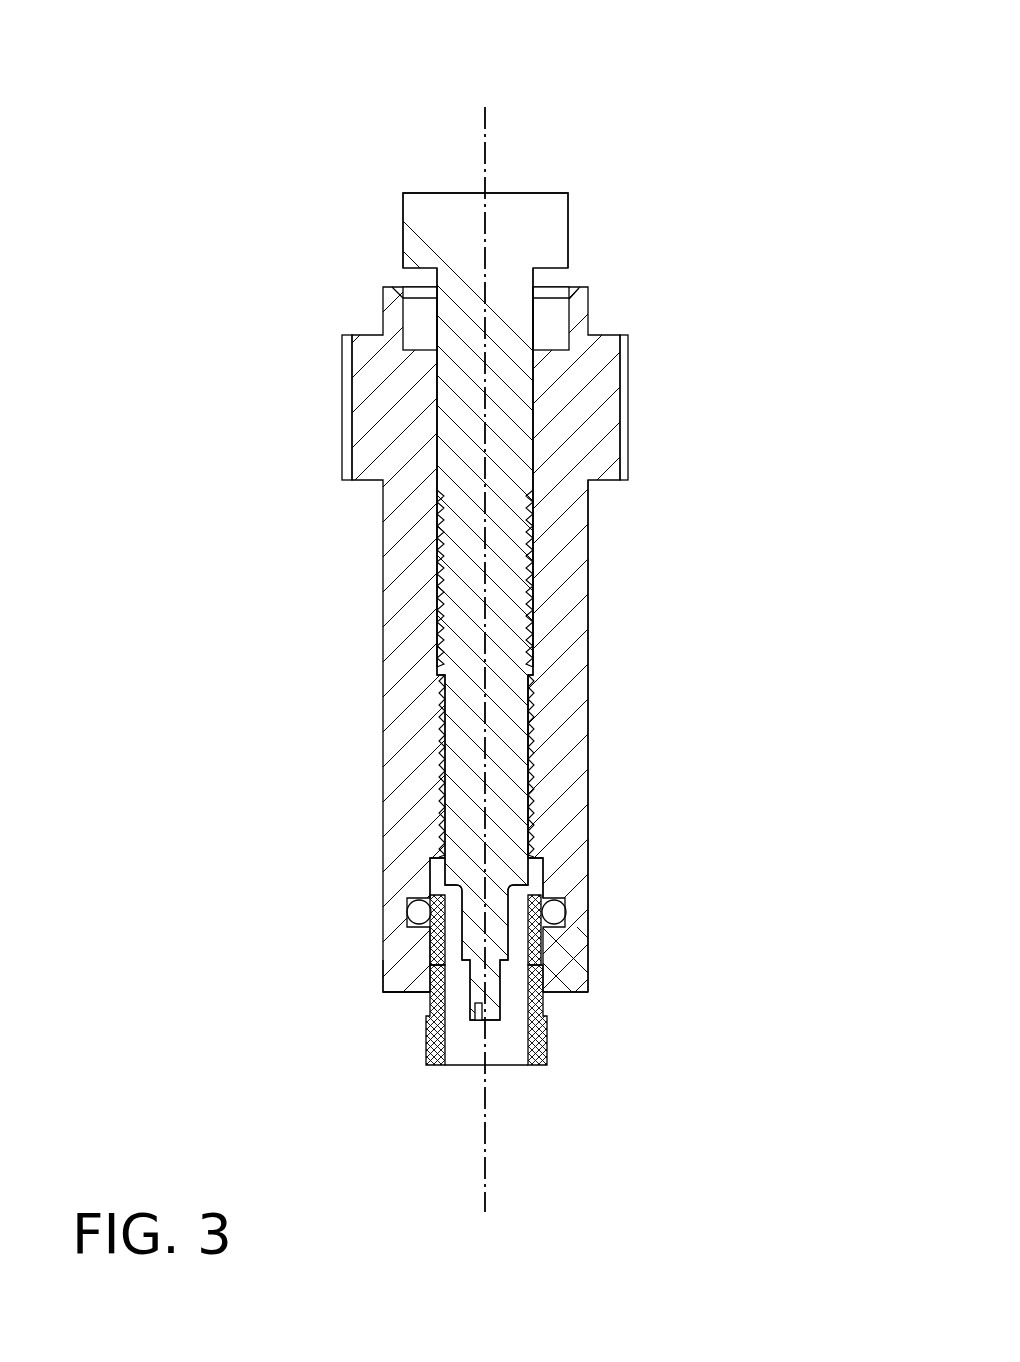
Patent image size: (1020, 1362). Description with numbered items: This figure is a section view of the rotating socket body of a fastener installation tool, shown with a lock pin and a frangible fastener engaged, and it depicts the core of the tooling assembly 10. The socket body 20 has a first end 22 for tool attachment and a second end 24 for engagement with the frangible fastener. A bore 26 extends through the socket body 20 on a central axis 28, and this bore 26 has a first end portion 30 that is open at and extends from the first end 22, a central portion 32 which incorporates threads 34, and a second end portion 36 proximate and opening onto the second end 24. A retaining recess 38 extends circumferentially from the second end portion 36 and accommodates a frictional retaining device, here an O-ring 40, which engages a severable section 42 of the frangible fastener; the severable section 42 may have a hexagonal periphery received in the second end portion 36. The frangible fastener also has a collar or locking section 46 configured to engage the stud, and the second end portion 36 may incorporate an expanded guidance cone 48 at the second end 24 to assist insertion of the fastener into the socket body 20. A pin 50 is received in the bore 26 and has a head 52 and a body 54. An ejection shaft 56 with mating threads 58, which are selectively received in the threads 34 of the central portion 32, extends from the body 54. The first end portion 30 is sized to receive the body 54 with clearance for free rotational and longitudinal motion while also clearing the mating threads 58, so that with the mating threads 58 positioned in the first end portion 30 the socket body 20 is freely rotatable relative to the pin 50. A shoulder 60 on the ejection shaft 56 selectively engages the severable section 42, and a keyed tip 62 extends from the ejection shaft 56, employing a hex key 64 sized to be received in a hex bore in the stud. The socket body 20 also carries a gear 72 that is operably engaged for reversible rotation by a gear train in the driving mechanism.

The tooling assembly 10 is at (694, 582).
The socket body 20 is at (510, 615).
The first end 22 is at (577, 290).
The second end 24 is at (588, 992).
The bore 26 is at (537, 558).
The central axis 28 is at (486, 128).
The first end portion 30 is at (536, 423).
The central portion 32 is at (530, 786).
The threads 34 is at (533, 742).
The second end portion 36 is at (543, 878).
The retaining recess 38 is at (563, 928).
The O-ring 40 is at (418, 912).
The severable section 42 is at (438, 935).
The locking section 46 is at (427, 1038).
The guidance cone 48 is at (403, 980).
The pin 50 is at (510, 617).
The head 52 is at (405, 222).
The body 54 is at (437, 330).
The ejection shaft 56 is at (447, 584).
The mating threads 58 is at (443, 593).
The shoulder 60 is at (447, 884).
The keyed tip 62 is at (473, 942).
The hex key 64 is at (477, 1021).
The gear 72 is at (343, 392).